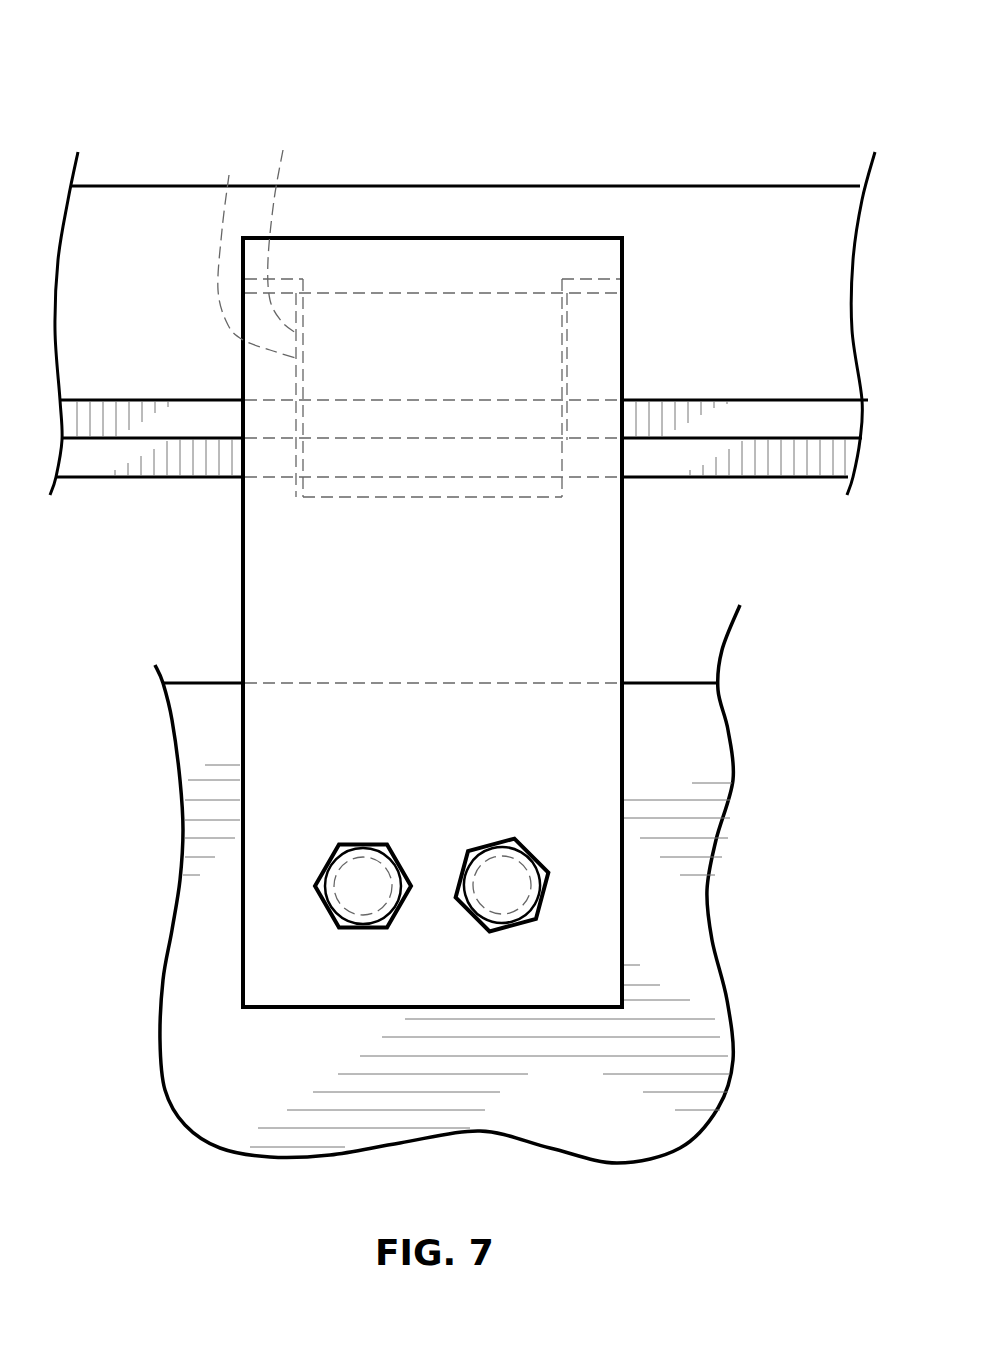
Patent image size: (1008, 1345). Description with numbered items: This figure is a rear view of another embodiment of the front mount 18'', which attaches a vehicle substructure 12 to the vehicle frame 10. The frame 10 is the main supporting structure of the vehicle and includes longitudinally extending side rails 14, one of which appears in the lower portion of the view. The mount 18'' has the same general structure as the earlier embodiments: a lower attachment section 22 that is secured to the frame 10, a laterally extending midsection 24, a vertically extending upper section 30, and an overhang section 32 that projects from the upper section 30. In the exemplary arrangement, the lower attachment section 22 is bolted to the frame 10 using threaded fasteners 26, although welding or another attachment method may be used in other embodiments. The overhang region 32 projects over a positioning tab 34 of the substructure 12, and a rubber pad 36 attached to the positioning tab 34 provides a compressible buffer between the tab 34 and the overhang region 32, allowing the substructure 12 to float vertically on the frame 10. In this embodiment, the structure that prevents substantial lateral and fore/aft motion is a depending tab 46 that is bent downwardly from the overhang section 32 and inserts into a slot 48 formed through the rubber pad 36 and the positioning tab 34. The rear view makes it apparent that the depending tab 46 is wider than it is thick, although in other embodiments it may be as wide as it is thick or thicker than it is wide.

The front mount 18'' is at (192, 51).
The substructure 12 is at (148, 186).
The slot 48 is at (254, 245).
The depending tab 46 is at (286, 222).
The overhang region 32 is at (560, 238).
The rubber pad 36 is at (590, 325).
The vertically extending upper section 30 is at (622, 365).
The positioning tab 34 is at (138, 400).
The laterally extending midsection 24 is at (622, 588).
The lower attachment section 22 is at (622, 758).
The frame 10 is at (182, 683).
The side rail 14 is at (195, 938).
The threaded fastener 26 is at (325, 912).